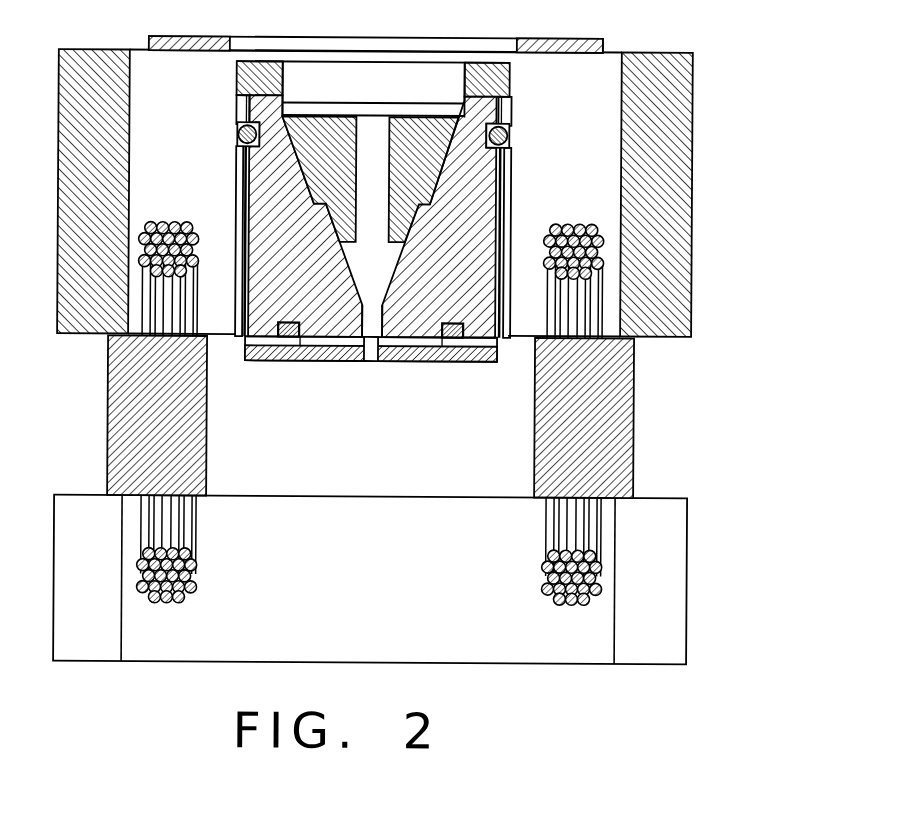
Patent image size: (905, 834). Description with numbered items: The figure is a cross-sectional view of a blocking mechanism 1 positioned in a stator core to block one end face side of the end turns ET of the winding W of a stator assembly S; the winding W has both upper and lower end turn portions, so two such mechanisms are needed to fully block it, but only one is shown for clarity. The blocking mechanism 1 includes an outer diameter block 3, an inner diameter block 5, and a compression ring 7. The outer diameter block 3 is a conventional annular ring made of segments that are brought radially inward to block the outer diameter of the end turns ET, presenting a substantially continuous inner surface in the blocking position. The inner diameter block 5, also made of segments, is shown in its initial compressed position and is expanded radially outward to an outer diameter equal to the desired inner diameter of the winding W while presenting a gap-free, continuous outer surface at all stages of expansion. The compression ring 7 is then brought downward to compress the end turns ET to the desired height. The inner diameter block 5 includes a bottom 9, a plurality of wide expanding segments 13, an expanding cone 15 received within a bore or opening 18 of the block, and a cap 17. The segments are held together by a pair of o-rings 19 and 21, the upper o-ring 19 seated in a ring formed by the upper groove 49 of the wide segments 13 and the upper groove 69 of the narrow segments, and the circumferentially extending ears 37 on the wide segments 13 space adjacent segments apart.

The blocking mechanism 1 is at (716, 55).
The outer diameter block 3 is at (691, 173).
The inner diameter block 5 is at (380, 371).
The compression ring 7 is at (193, 37).
The bottom 9 is at (415, 361).
The wide expanding segments 13 is at (276, 213).
The expanding cone 15 is at (413, 130).
The cap 17 is at (251, 62).
The bore or opening 18 is at (355, 263).
The o-ring 19 is at (506, 133).
The o-ring 21 is at (462, 361).
The ears 37 is at (240, 110).
The upper groove 49 is at (237, 130).
The upper groove 69 is at (240, 144).
The end turns ET is at (583, 233).
The winding W is at (600, 295).
The stator assembly S is at (634, 407).